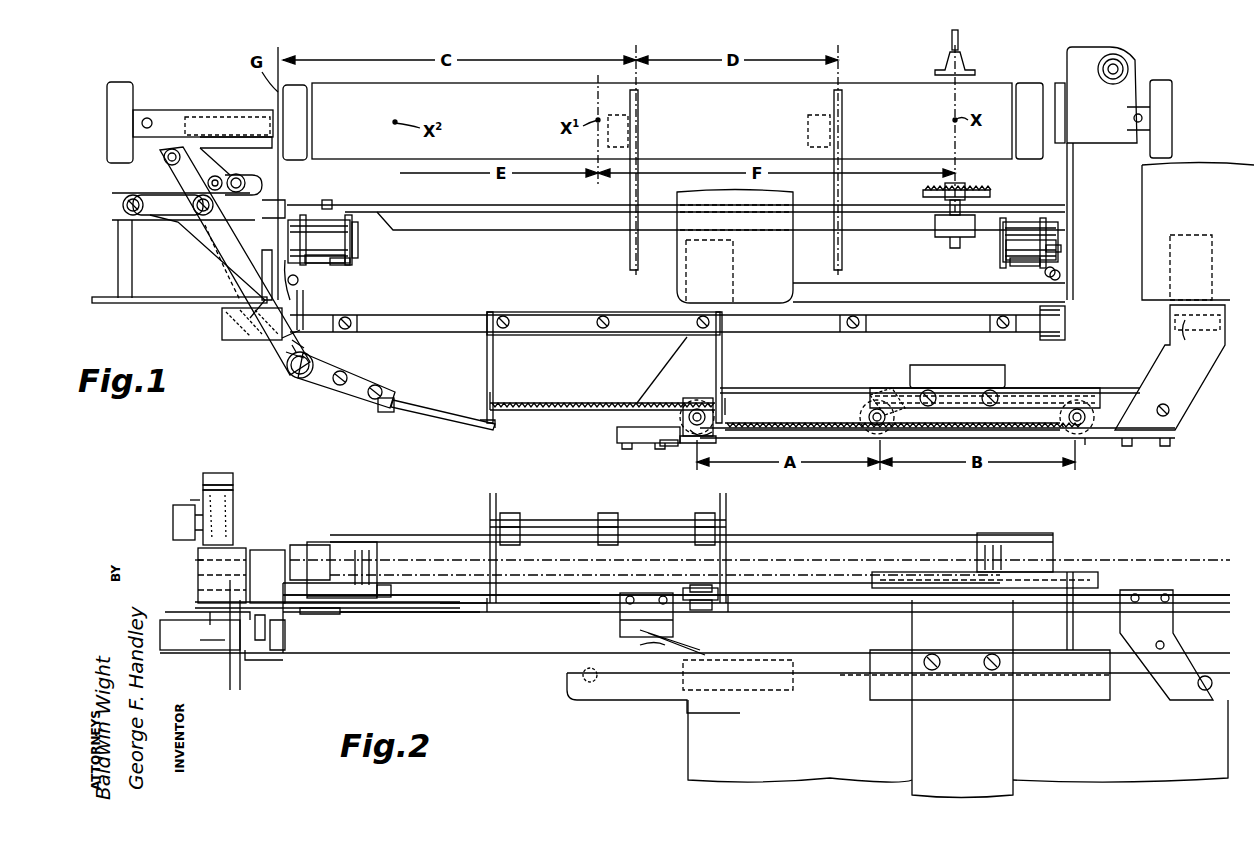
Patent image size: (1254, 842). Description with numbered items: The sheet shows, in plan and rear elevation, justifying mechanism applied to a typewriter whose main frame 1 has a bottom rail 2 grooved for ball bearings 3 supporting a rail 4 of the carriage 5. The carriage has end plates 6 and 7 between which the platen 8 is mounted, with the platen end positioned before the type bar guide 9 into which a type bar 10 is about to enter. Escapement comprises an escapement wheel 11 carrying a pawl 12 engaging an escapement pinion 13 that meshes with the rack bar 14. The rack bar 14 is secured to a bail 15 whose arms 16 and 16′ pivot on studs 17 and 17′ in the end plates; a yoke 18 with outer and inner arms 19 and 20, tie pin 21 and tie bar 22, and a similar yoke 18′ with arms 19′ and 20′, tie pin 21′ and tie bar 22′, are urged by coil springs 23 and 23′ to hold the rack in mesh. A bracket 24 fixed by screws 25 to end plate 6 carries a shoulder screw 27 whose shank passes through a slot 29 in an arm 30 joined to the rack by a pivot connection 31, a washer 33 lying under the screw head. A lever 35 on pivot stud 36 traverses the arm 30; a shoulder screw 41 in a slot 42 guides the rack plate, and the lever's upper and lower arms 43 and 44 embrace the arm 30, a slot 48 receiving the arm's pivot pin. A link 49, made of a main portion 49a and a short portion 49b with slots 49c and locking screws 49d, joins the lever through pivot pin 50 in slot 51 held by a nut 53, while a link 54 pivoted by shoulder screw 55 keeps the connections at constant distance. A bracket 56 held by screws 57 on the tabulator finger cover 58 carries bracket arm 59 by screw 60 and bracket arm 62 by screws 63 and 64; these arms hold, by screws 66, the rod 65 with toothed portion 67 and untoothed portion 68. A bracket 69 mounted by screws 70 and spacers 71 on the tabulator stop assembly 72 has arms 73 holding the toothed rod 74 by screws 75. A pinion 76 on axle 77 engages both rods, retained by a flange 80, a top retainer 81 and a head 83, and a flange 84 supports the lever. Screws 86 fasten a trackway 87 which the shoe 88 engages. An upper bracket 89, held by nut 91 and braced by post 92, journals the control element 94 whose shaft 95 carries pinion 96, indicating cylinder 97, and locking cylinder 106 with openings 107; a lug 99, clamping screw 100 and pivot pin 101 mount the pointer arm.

In FIG. 1, the main frame 1 is at (665, 293).
In FIG. 2, the main frame 1 is at (677, 741).
In FIG. 2, the bottom rail 2 is at (580, 712).
In FIG. 2, the ball bearings 3 is at (586, 670).
In FIG. 2, the rail 4 is at (520, 665).
In FIG. 1, the carriage 5 is at (1148, 66).
In FIG. 2, the carriage 5 is at (1061, 540).
In FIG. 2, the end plate 6 is at (300, 545).
In FIG. 1, the end plate 7 is at (1075, 178).
In FIG. 2, the end plate 7 is at (1075, 632).
In FIG. 1, the platen 8 is at (890, 83).
In FIG. 1, the type bar guide 9 is at (972, 70).
In FIG. 1, the type bar 10 is at (960, 44).
In FIG. 1, the escapement wheel 11 is at (972, 190).
In FIG. 1, the pawl 12 is at (925, 195).
In FIG. 1, the escapement pinion 13 is at (985, 198).
In FIG. 2, the escapement pinion 13 is at (498, 582).
In FIG. 1, the escapement rack bar element 14 is at (532, 210).
In FIG. 1, the bail 15 is at (507, 228).
In FIG. 1, the bail arm 16 is at (342, 263).
In FIG. 1, the stud 17 is at (335, 268).
In FIG. 1, the yoke 18 is at (361, 242).
In FIG. 1, the outer arm 19 is at (299, 280).
In FIG. 1, the inner arm 20 is at (358, 255).
In FIG. 1, the tie pin 21 is at (335, 225).
In FIG. 1, the tie bar 22 is at (303, 215).
In FIG. 1, the coil spring 23 is at (300, 297).
In FIG. 1, the bracket 24 is at (240, 140).
In FIG. 2, the bracket 24 is at (253, 700).
In FIG. 1, the screws 25 is at (267, 250).
In FIG. 2, the screws 25 is at (276, 648).
In FIG. 1, the shoulder screw 27 is at (130, 215).
In FIG. 1, the slot 29 is at (130, 185).
In FIG. 1, the arm 30 is at (150, 222).
In FIG. 2, the arm 30 is at (168, 652).
In FIG. 1, the horizontal pivot connection 31 is at (330, 200).
In FIG. 1, the washer 33 is at (122, 212).
In FIG. 1, the operating lever 35 is at (207, 287).
In FIG. 2, the operating lever 35 is at (195, 602).
In FIG. 1, the pivot stud 36 is at (195, 148).
In FIG. 1, the shoulder screw 41 is at (210, 242).
In FIG. 1, the slot 42 is at (240, 308).
In FIG. 1, the upper arm 43 is at (168, 150).
In FIG. 2, the upper arm 43 is at (215, 625).
In FIG. 2, the lower arm 44 is at (205, 652).
In FIG. 1, the slot 48 is at (150, 165).
In FIG. 1, the link 49 is at (473, 438).
In FIG. 2, the link 49 is at (455, 620).
In FIG. 1, the main link portion 49a is at (440, 415).
In FIG. 2, the main link portion 49a is at (480, 613).
In FIG. 1, the adjustable short link portion 49b is at (385, 392).
In FIG. 2, the adjustable short link portion 49b is at (400, 614).
In FIG. 1, the slots 49c is at (348, 376).
In FIG. 1, the locking screws 49d is at (345, 390).
In FIG. 2, the locking screws 49d is at (382, 594).
In FIG. 2, the pivot pin 50 is at (312, 600).
In FIG. 1, the slot 51 is at (305, 348).
In FIG. 2, the nut 53 is at (322, 614).
In FIG. 1, the link 54 is at (230, 334).
In FIG. 2, the link 54 is at (345, 575).
In FIG. 1, the shoulder screw 55 is at (200, 215).
In FIG. 2, the shoulder screw 55 is at (230, 590).
In FIG. 1, the bracket 56 is at (290, 372).
In FIG. 2, the bracket 56 is at (868, 660).
In FIG. 2, the screws 57 is at (986, 660).
In FIG. 1, the tabulator finger cover 58 is at (1006, 382).
In FIG. 2, the tabulator finger cover 58 is at (1000, 742).
In FIG. 1, the bracket arm 59 is at (657, 368).
In FIG. 2, the bracket arm 59 is at (620, 625).
In FIG. 2, the screw 60 is at (650, 648).
In FIG. 1, the bracket arm 62 is at (1165, 352).
In FIG. 2, the bracket arm 62 is at (1180, 635).
In FIG. 1, the screw 63 is at (1170, 410).
In FIG. 2, the screw 63 is at (1168, 646).
In FIG. 1, the screw 64 is at (1186, 325).
In FIG. 2, the screw 64 is at (1200, 695).
In FIG. 1, the rod 65 is at (615, 437).
In FIG. 2, the rod 65 is at (880, 598).
In FIG. 1, the screws 66 is at (630, 450).
In FIG. 2, the screws 66 is at (630, 620).
In FIG. 1, the toothed portion 67 is at (722, 433).
In FIG. 1, the untoothed portion 68 is at (1006, 448).
In FIG. 1, the bracket 69 is at (560, 316).
In FIG. 2, the bracket 69 is at (560, 520).
In FIG. 1, the screws 70 is at (506, 316).
In FIG. 2, the screws 70 is at (506, 514).
In FIG. 2, the spacers 71 is at (690, 525).
In FIG. 1, the tabulator stop assembly 72 is at (451, 319).
In FIG. 2, the tabulator stop assembly 72 is at (454, 534).
In FIG. 1, the arms 73 is at (494, 372).
In FIG. 2, the toothed rod 74 is at (560, 604).
In FIG. 1, the screws 75 is at (490, 404).
In FIG. 2, the screws 75 is at (487, 605).
In FIG. 1, the pinion 76 is at (775, 430).
In FIG. 1, the axle 77 is at (880, 400).
In FIG. 2, the axle 77 is at (700, 585).
In FIG. 1, the flange 80 is at (697, 455).
In FIG. 2, the flange 80 is at (708, 606).
In FIG. 1, the top retainer 81 is at (672, 447).
In FIG. 2, the head 83 is at (690, 612).
In FIG. 1, the flange 84 is at (140, 303).
In FIG. 2, the flange 84 is at (272, 660).
In FIG. 1, the screws 86 is at (985, 392).
In FIG. 1, the trackway 87 is at (1025, 418).
In FIG. 2, the trackway 87 is at (1095, 578).
In FIG. 1, the shoe 88 is at (700, 405).
In FIG. 2, the shoe 88 is at (690, 590).
In FIG. 1, the upper bracket 89 is at (252, 345).
In FIG. 2, the upper bracket 89 is at (258, 548).
In FIG. 2, the nut 91 is at (283, 550).
In FIG. 1, the post 92 is at (276, 186).
In FIG. 2, the post 92 is at (258, 642).
In FIG. 2, the rotary control element 94 is at (183, 503).
In FIG. 1, the vertical shaft 95 is at (217, 176).
In FIG. 2, the vertical shaft 95 is at (220, 660).
In FIG. 1, the pinion 96 is at (244, 180).
In FIG. 2, the pinion 96 is at (245, 682).
In FIG. 2, the space-indicating cylinder 97 is at (198, 562).
In FIG. 2, the lug 99 is at (215, 472).
In FIG. 2, the clamping screw 100 is at (172, 506).
In FIG. 2, the pivot pin 101 is at (172, 532).
In FIG. 2, the cylinder 106 is at (235, 490).
In FIG. 2, the openings 107 is at (235, 510).
In FIG. 1, the bail arm 16′ is at (1058, 252).
In FIG. 1, the stud 17′ is at (1030, 265).
In FIG. 1, the yoke 18′ is at (992, 240).
In FIG. 1, the outer arm 19′ is at (1057, 272).
In FIG. 1, the inner arm 20′ is at (1004, 262).
In FIG. 1, the tie pin 21′ is at (1020, 230).
In FIG. 1, the tie bar 22′ is at (1045, 236).
In FIG. 1, the coil spring 23′ is at (1075, 285).